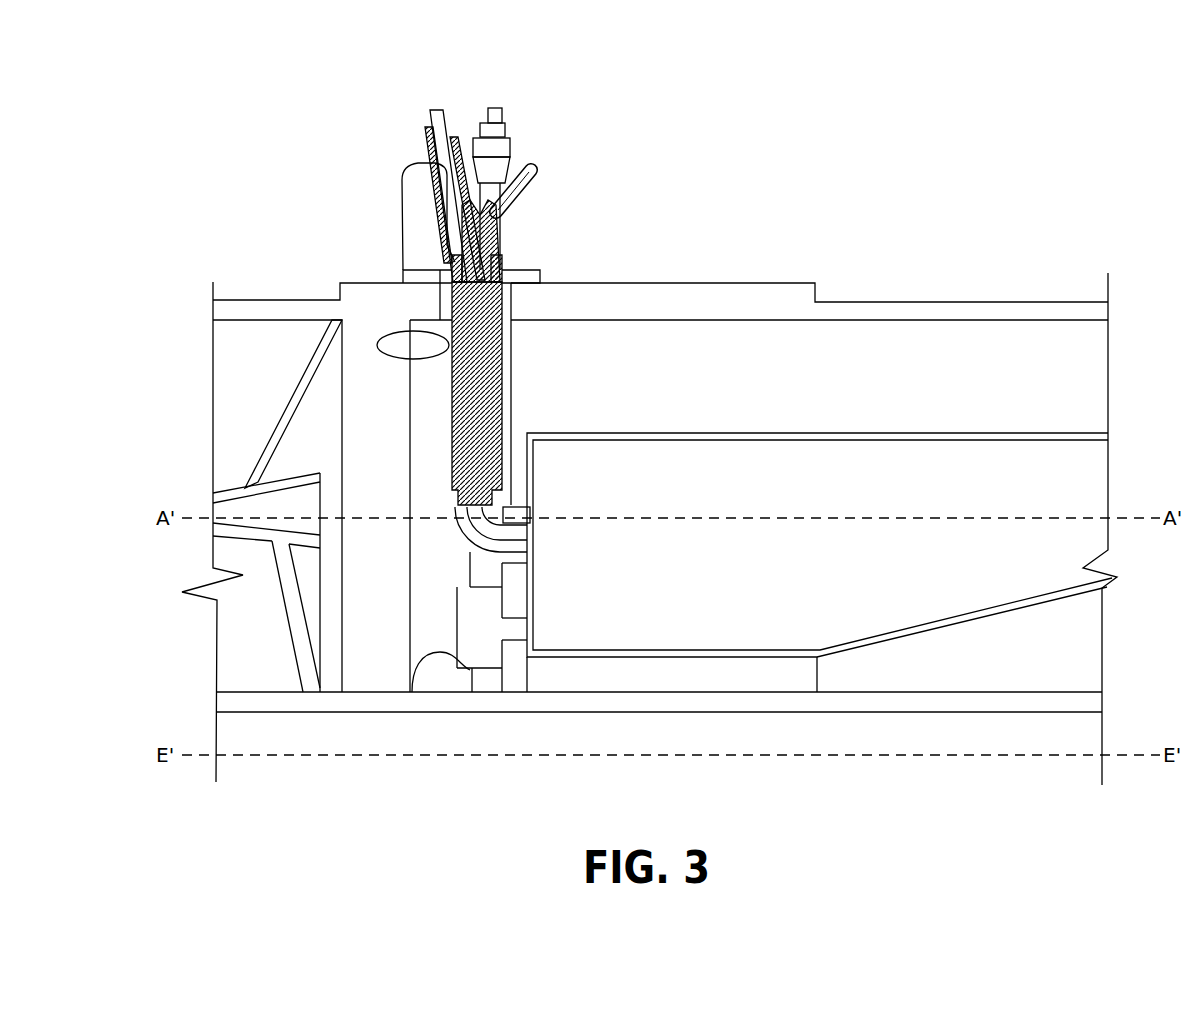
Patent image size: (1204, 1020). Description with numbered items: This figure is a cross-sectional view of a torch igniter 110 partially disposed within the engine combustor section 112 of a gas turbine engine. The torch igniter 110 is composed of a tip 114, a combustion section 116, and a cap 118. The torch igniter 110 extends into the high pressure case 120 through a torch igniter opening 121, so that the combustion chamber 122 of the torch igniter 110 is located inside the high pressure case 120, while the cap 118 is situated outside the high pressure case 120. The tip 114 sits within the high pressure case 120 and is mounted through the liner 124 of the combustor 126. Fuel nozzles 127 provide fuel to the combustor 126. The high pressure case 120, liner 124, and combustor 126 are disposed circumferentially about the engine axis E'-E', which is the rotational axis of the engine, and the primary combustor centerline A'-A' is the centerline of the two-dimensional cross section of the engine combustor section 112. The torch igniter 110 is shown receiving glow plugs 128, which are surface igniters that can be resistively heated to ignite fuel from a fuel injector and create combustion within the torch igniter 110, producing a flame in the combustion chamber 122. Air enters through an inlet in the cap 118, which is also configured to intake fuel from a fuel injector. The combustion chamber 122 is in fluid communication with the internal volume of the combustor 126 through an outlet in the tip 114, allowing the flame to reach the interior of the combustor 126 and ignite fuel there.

The torch igniter 110 is at (640, 167).
The engine combustor section 112 is at (327, 260).
The tip 114 is at (460, 555).
The combustion section 116 is at (527, 393).
The cap 118 is at (540, 220).
The high pressure case 120 is at (770, 283).
The torch igniter opening 121 is at (437, 288).
The combustion chamber 122 is at (450, 357).
The liner 124 is at (963, 433).
The combustor 126 is at (755, 457).
The fuel nozzles 127 is at (415, 485).
The glow plugs 128 is at (431, 106).